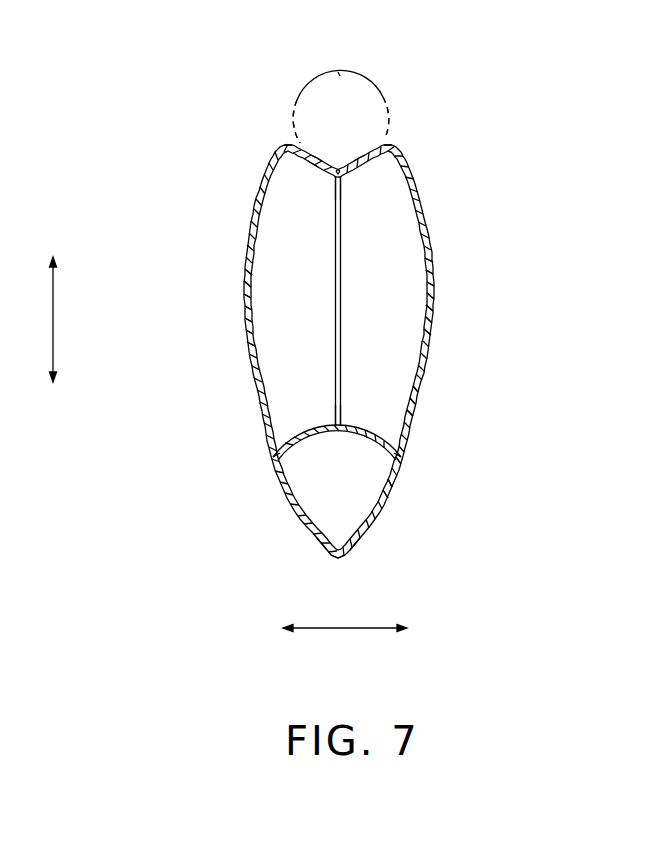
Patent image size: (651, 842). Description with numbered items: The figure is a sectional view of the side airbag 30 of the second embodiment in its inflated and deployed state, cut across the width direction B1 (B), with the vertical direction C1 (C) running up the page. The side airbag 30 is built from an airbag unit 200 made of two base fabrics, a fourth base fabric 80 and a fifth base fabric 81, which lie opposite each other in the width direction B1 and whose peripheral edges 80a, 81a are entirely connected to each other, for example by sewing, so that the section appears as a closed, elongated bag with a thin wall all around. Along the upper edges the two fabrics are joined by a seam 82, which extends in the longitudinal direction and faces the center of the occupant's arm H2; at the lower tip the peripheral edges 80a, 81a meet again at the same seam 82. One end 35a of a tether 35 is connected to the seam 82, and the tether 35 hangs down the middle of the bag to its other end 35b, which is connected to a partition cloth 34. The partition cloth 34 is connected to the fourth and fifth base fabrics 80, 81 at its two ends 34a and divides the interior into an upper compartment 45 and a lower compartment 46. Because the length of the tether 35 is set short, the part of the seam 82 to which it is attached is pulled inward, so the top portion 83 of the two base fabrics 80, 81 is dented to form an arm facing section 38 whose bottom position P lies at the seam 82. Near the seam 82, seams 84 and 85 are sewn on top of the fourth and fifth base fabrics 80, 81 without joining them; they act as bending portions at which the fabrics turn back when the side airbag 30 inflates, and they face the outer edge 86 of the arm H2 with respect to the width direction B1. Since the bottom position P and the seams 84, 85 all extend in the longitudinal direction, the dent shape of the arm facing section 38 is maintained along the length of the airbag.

The side airbag 30 is at (436, 199).
The airbag unit 200 is at (437, 263).
The fourth base fabric 80 is at (430, 316).
The fifth base fabric 81 is at (247, 316).
The peripheral edge 80a is at (342, 177).
The peripheral edge 81a is at (334, 177).
The seam 82 is at (340, 172).
The top portion 83 is at (322, 157).
The seam 84 is at (392, 146).
The seam 85 is at (285, 146).
The outer edge 86 is at (291, 114).
The arm facing section 38 is at (337, 167).
The tether 35 is at (343, 302).
The one end 35a is at (334, 183).
The other end 35b is at (334, 418).
The partition cloth 34 is at (367, 438).
The partition ends 34a is at (272, 458).
The upper compartment 45 is at (398, 406).
The lower compartment 46 is at (372, 497).
The bottom position P is at (343, 182).
The arm H2 is at (340, 76).
The vertical direction C is at (91, 319).
The vertical direction C1 is at (55, 320).
The width direction B is at (345, 654).
The width direction B1 is at (345, 630).